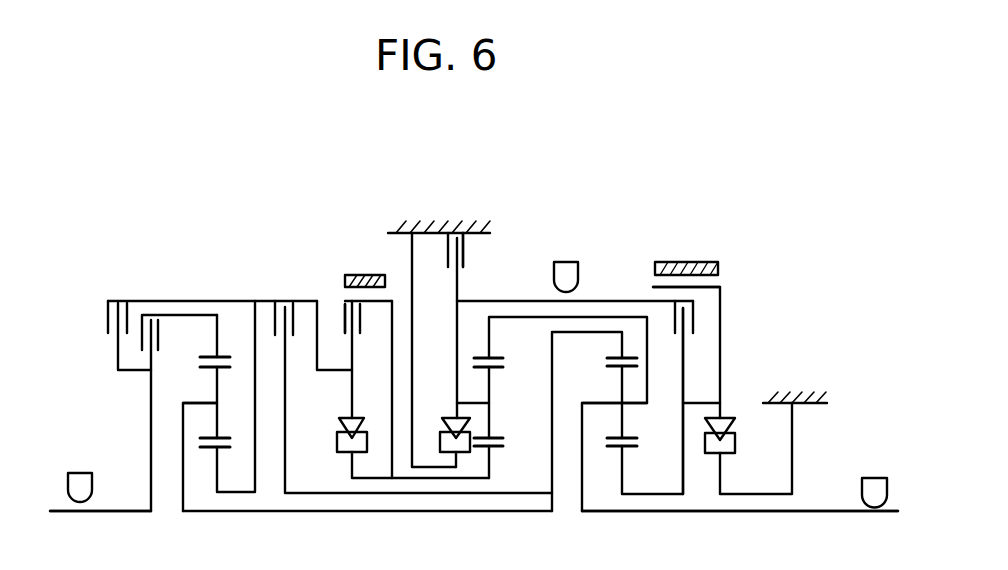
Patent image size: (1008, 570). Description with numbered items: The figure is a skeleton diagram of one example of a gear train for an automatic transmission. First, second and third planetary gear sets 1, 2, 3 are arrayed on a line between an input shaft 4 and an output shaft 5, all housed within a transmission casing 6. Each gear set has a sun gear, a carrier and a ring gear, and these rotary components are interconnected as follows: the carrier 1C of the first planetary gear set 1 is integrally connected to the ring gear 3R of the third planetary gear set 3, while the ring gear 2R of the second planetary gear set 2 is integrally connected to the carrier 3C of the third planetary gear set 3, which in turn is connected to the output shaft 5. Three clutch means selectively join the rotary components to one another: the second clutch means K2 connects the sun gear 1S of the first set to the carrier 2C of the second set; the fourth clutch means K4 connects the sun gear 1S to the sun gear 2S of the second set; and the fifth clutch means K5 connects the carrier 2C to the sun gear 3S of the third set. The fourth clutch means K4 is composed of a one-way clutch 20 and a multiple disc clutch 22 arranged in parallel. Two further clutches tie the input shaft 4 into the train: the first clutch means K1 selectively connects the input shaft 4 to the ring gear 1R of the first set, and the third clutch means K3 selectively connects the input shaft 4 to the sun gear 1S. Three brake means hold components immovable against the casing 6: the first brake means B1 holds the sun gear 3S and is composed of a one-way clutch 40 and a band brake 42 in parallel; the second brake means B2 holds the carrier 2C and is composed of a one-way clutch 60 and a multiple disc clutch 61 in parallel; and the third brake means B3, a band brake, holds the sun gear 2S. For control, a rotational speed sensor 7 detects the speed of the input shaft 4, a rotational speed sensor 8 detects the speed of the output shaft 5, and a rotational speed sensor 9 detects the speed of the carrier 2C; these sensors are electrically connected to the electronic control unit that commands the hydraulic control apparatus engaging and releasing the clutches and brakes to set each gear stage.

The first planetary gear set 1 is at (203, 432).
The second planetary gear set 2 is at (539, 442).
The third planetary gear set 3 is at (617, 439).
The input shaft 4 is at (117, 511).
The output shaft 5 is at (816, 511).
The transmission casing 6 is at (450, 232).
The rotational speed sensor 7 is at (77, 473).
The rotational speed sensor 8 is at (874, 478).
The rotational speed sensor 9 is at (565, 262).
The one-way clutch 20 is at (337, 438).
The multiple disc clutch 22 is at (345, 320).
The one-way clutch 40 is at (720, 415).
The band brake 42 is at (676, 262).
The one-way clutch 60 is at (442, 443).
The multiple disc clutch 61 is at (463, 252).
The first clutch means K1 is at (179, 413).
The second clutch means K2 is at (410, 384).
The third clutch means K3 is at (127, 322).
The fourth clutch means K4 is at (366, 322).
The fifth clutch means K5 is at (672, 397).
The first brake means B1 is at (727, 271).
The second brake means B2 is at (442, 399).
The third brake means B3 is at (365, 269).
The ring gear 1R is at (225, 349).
The carrier 1C is at (200, 391).
The sun gear 1S is at (225, 465).
The ring gear 2R is at (500, 349).
The carrier 2C is at (493, 391).
The sun gear 2S is at (500, 458).
The ring gear 3R is at (606, 351).
The carrier 3C is at (611, 391).
The sun gear 3S is at (631, 465).